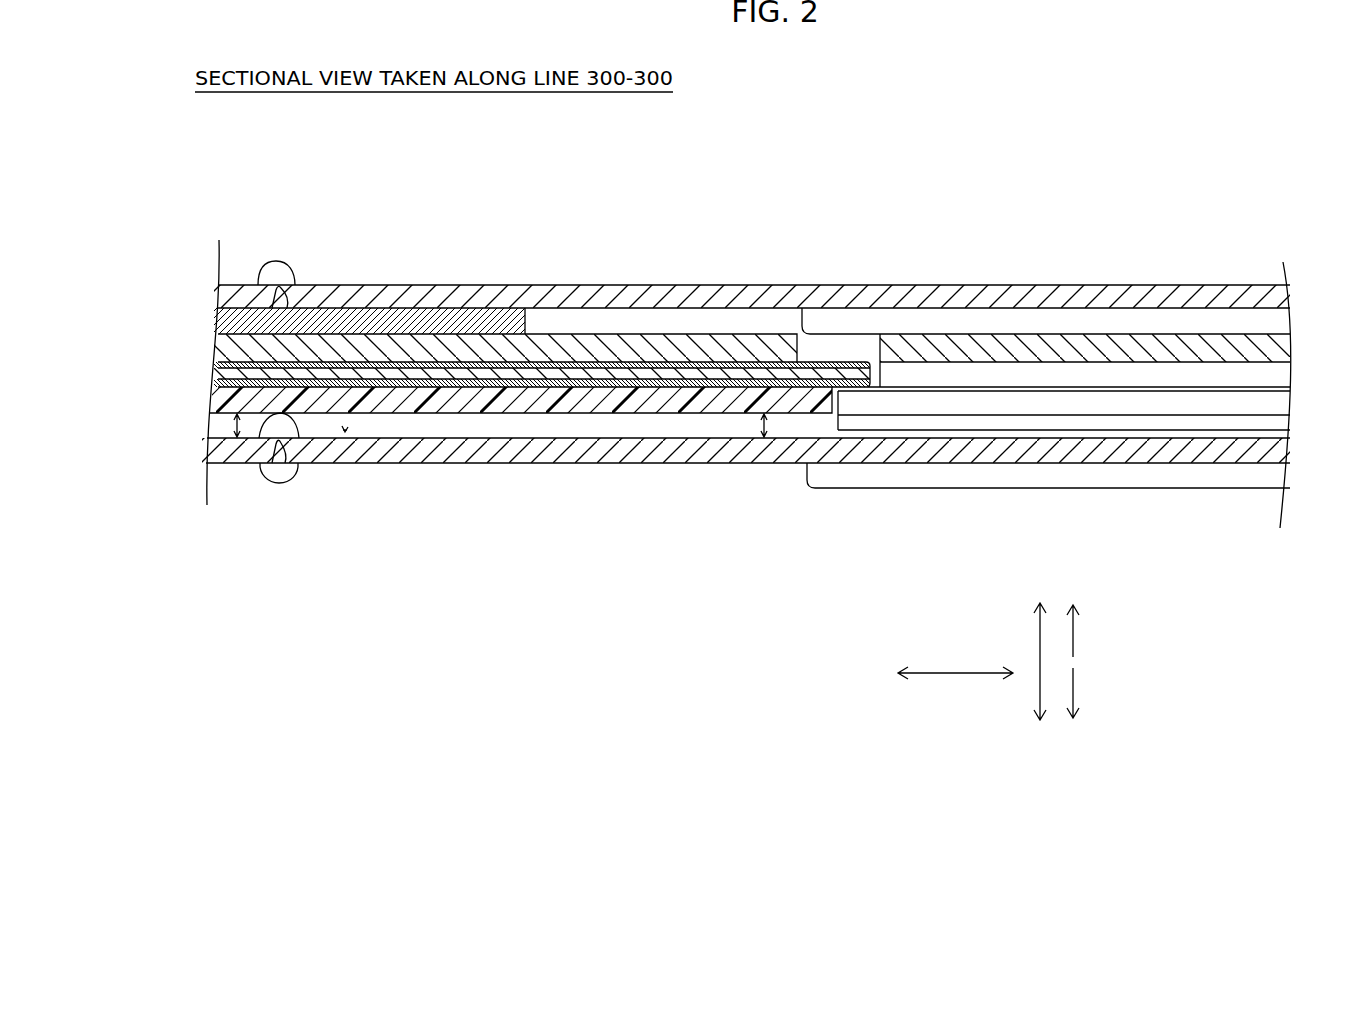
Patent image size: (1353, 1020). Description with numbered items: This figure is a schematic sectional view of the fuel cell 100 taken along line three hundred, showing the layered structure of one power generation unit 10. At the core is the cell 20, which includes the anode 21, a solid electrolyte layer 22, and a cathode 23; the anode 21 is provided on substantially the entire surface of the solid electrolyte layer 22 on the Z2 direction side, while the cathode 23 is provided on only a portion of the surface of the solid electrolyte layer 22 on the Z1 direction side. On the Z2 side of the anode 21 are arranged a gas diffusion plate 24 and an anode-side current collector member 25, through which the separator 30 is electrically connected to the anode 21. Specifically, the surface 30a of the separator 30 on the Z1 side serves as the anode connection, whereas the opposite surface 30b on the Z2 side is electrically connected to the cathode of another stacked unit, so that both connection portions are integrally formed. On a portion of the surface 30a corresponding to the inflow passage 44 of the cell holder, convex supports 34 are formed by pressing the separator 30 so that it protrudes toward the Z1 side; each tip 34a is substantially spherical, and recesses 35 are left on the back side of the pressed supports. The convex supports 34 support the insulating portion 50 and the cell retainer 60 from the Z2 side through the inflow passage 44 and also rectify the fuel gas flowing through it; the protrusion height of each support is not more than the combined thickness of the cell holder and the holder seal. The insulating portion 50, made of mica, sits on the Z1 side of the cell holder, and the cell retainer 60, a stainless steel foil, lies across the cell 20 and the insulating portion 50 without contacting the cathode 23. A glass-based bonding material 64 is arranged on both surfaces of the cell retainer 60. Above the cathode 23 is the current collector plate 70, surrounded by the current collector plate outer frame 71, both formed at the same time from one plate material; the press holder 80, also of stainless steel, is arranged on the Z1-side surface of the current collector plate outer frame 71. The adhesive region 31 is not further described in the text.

The display device 100 is at (714, 435).
The power generation unit 10 is at (1040, 206).
The cell 20 is at (1048, 476).
The anode 21 is at (1057, 405).
The solid electrolyte layer 22 is at (1085, 392).
The cathode 23 is at (1115, 375).
The gas diffusion plate 24 is at (946, 433).
The anode-side current collector member 25 is at (985, 422).
The separator 30 is at (720, 337).
The surface 30a is at (657, 284).
The surface 30b is at (607, 318).
The adhesive layer 31 is at (728, 322).
The convex support 34 is at (295, 272).
The tip 34a is at (276, 285).
The recess 35 is at (279, 468).
The inflow passage 44 is at (348, 434).
The insulating portion 50 is at (212, 400).
The cell retainer 60 is at (218, 373).
The glass-based bonding material 64 is at (218, 365).
The current collector plate 70 is at (930, 348).
The current collector plate outer frame 71 is at (218, 344).
The press holder 80 is at (218, 322).